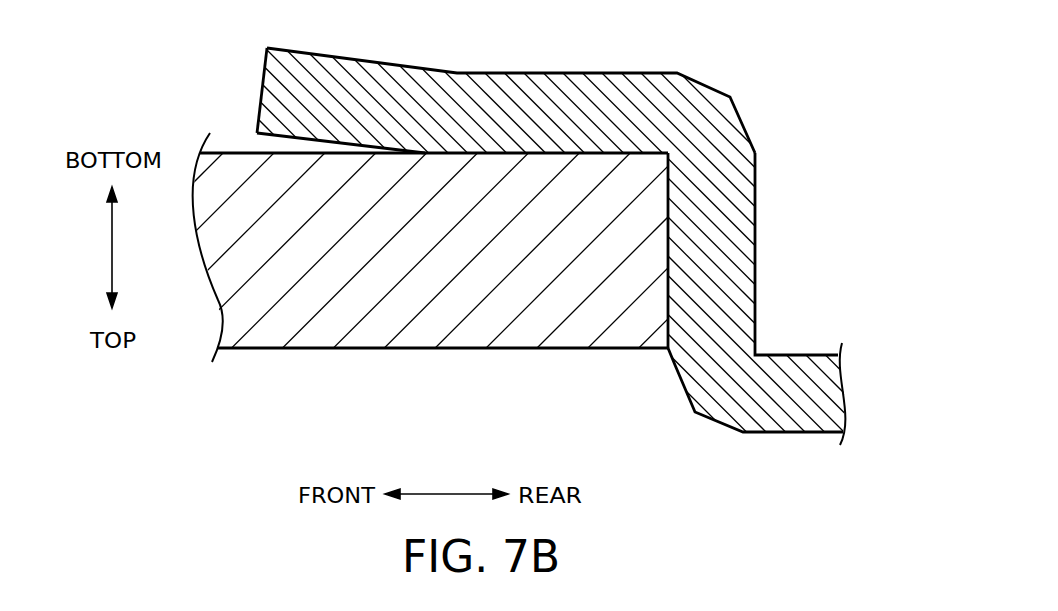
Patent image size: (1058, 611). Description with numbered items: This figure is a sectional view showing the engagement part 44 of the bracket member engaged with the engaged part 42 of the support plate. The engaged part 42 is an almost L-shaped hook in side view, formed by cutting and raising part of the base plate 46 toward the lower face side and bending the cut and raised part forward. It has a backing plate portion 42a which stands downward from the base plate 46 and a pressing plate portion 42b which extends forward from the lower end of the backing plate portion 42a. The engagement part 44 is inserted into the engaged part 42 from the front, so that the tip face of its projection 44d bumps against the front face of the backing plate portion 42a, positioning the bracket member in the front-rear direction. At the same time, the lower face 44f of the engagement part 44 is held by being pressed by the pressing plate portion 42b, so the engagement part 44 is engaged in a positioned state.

The engaged part 42 is at (630, 62).
The backing plate portion 42a is at (735, 297).
The pressing plate portion 42b is at (400, 95).
The engagement part 44 is at (265, 363).
The projection 44d is at (670, 248).
The lower face 44f is at (532, 152).
The base plate 46 is at (788, 447).